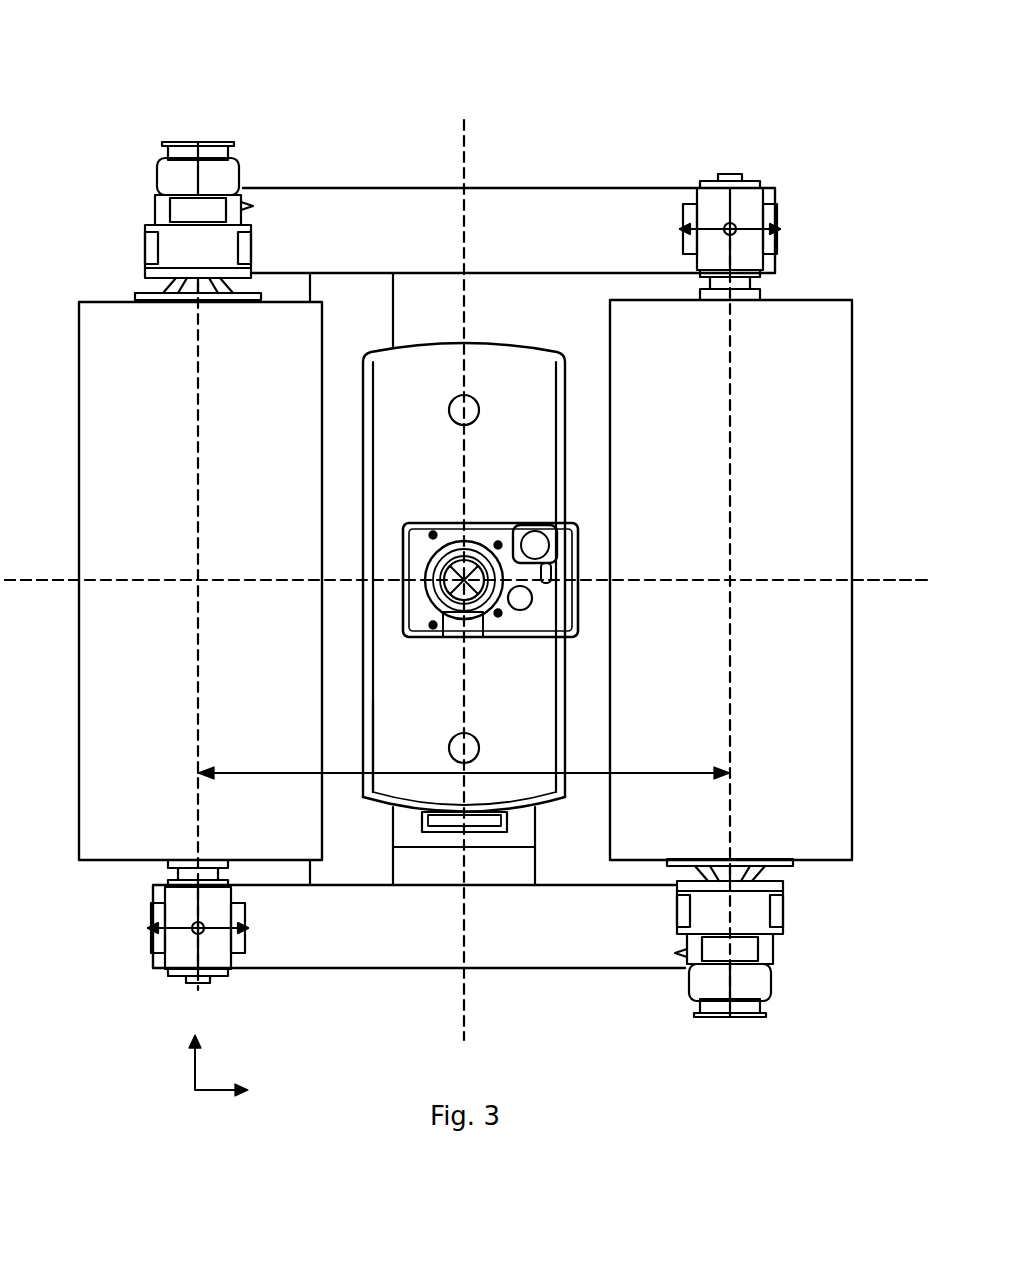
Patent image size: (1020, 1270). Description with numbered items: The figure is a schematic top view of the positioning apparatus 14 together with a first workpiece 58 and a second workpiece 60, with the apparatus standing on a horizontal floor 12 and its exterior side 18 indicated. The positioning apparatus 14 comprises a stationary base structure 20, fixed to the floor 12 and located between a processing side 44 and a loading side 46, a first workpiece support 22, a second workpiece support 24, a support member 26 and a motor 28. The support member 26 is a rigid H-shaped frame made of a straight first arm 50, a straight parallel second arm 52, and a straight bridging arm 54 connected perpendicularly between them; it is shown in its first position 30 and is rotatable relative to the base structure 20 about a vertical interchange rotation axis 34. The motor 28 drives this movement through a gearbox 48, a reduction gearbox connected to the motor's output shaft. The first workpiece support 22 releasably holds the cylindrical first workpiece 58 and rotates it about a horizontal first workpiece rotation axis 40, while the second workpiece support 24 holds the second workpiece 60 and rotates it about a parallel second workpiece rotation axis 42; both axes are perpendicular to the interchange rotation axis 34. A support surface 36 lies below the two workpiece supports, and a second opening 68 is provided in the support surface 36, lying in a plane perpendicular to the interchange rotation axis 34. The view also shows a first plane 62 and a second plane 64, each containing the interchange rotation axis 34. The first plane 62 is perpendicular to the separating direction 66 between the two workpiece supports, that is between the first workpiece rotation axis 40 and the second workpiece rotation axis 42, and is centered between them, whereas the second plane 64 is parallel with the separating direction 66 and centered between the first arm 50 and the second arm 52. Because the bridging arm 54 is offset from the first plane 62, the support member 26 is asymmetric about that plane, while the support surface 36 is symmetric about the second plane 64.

The floor 12 is at (72, 1032).
The positioning apparatus 14 is at (157, 57).
The exterior side 18 is at (419, 959).
The base structure 20 is at (403, 480).
The first workpiece support 22 is at (202, 245).
The second workpiece support 24 is at (725, 245).
The support member 26 is at (509, 205).
The motor 28 is at (533, 540).
The first position 30 is at (107, 880).
The interchange rotation axis 34 is at (468, 597).
The support surface 36 is at (403, 698).
The first workpiece rotation axis 40 is at (200, 388).
The second workpiece rotation axis 42 is at (730, 388).
The processing side 44 is at (20, 538).
The loading side 46 is at (878, 538).
The gearbox 48 is at (536, 577).
The first arm 50 is at (558, 242).
The second arm 52 is at (560, 936).
The bridging arm 54 is at (340, 330).
The first workpiece 58 is at (122, 538).
The second workpiece 60 is at (773, 538).
The first plane 62 is at (464, 152).
The second plane 64 is at (877, 592).
The separating direction 66 is at (255, 771).
The second opening 68 is at (472, 745).